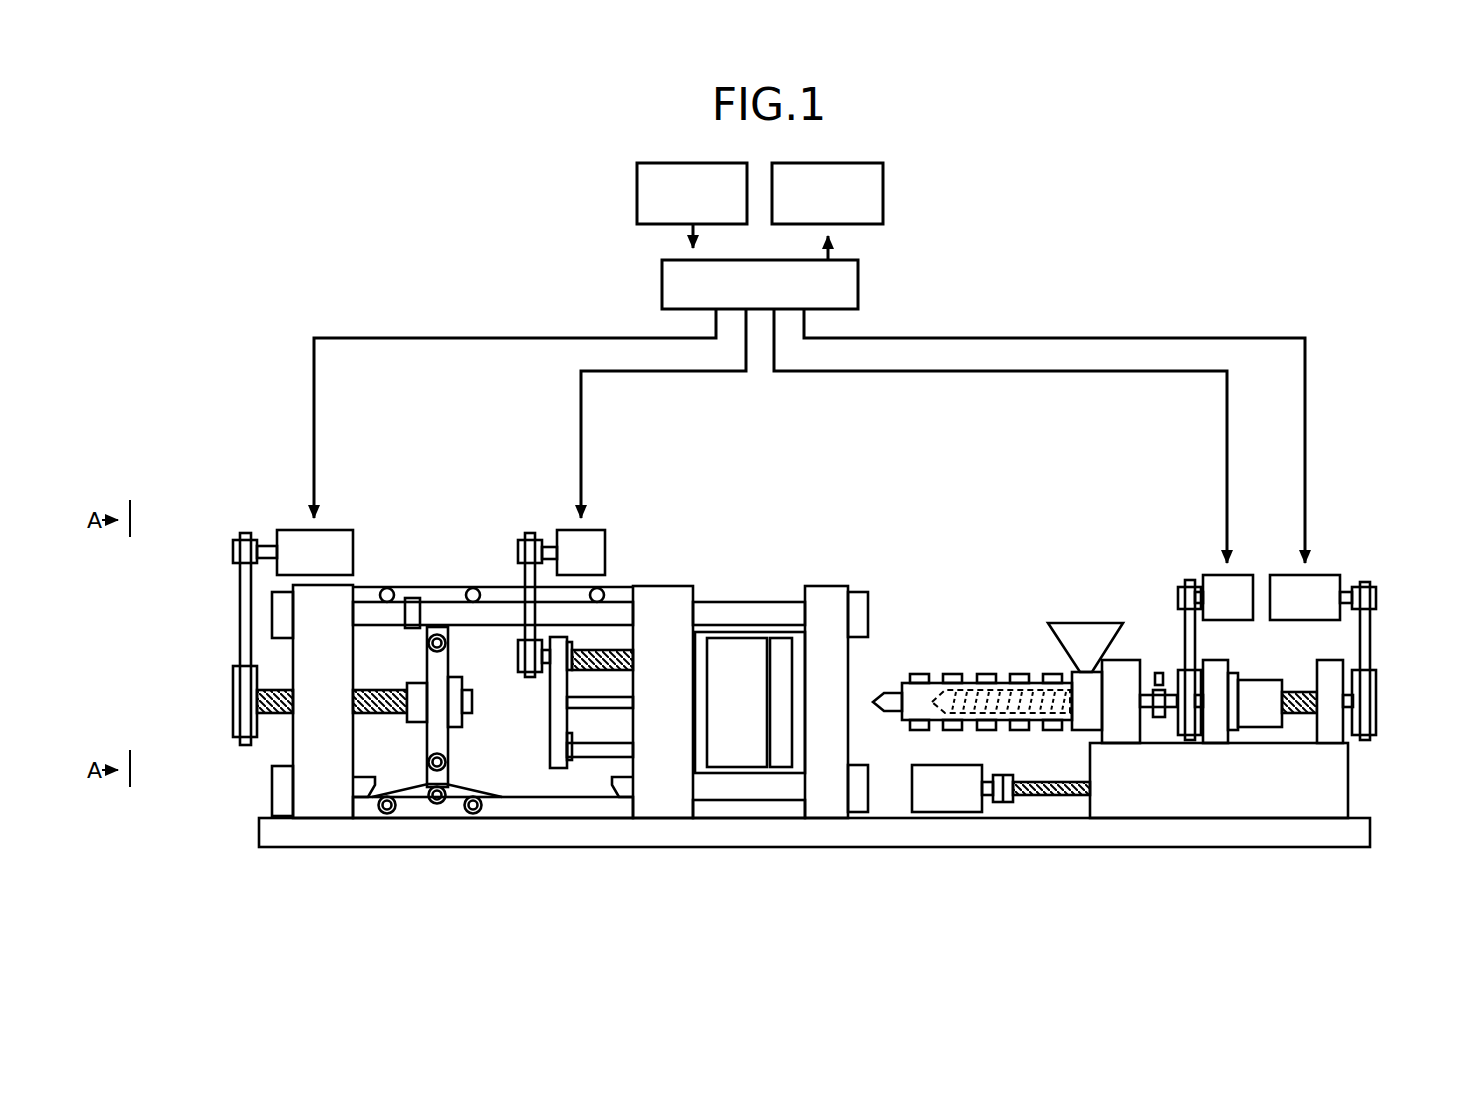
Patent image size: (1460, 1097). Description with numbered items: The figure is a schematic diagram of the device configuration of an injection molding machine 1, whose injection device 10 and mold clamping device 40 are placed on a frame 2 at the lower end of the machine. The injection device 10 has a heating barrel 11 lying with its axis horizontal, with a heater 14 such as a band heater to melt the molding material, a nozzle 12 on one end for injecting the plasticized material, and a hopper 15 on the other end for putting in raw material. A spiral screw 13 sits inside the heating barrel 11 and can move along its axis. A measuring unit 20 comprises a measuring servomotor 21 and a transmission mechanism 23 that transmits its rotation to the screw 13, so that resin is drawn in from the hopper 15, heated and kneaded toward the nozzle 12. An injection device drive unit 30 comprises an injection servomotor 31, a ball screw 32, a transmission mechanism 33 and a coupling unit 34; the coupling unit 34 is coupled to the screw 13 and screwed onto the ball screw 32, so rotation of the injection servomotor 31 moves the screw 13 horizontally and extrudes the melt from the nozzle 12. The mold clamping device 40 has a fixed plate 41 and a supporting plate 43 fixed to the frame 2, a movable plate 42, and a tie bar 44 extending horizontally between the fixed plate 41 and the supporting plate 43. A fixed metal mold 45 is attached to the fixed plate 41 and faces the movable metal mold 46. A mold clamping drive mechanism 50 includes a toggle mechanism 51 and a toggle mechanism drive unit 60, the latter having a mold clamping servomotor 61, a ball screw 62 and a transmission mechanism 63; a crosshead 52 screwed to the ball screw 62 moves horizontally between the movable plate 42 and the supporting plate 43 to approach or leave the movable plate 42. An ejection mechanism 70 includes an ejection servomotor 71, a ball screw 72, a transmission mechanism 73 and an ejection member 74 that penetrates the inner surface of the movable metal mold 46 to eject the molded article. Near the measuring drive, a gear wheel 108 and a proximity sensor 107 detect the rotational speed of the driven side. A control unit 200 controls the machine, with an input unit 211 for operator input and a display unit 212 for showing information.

The injection molding machine 1 is at (1218, 228).
The frame 2 is at (762, 832).
The injection device 10 is at (1106, 515).
The heating barrel 11 is at (970, 680).
The nozzle 12 is at (890, 697).
The screw 13 is at (973, 718).
The heater 14 is at (1020, 675).
The hopper 15 is at (1072, 630).
The measuring unit 20 is at (1190, 549).
The measuring servomotor 21 is at (1240, 583).
The transmission mechanism 23 is at (1163, 615).
The injection device drive unit 30 is at (1363, 551).
The injection servomotor 31 is at (1327, 582).
The ball screw 32 is at (1293, 688).
The transmission mechanism 33 is at (1389, 632).
The coupling unit 34 is at (1260, 687).
The mold clamping device 40 is at (650, 458).
The fixed plate 41 is at (827, 602).
The movable plate 42 is at (665, 603).
The supporting plate 43 is at (324, 797).
The tie bar 44 is at (440, 605).
The fixed metal mold 45 is at (780, 650).
The movable metal mold 46 is at (725, 650).
The mold clamping drive mechanism 50 is at (382, 485).
The toggle mechanism 51 is at (449, 765).
The crosshead 52 is at (447, 658).
The toggle mechanism drive unit 60 is at (196, 589).
The mold clamping servomotor 61 is at (293, 540).
The ball screw 62 is at (275, 717).
The transmission mechanism 63 is at (212, 608).
The ejection mechanism 70 is at (534, 506).
The ejection servomotor 71 is at (593, 538).
The ball screw 72 is at (568, 665).
The transmission mechanism 73 is at (506, 583).
The ejection member 74 is at (582, 760).
The proximity sensor 107 is at (1155, 677).
The gear wheel 108 is at (1162, 718).
The control unit 200 is at (858, 283).
The input unit 211 is at (637, 189).
The display unit 212 is at (883, 188).